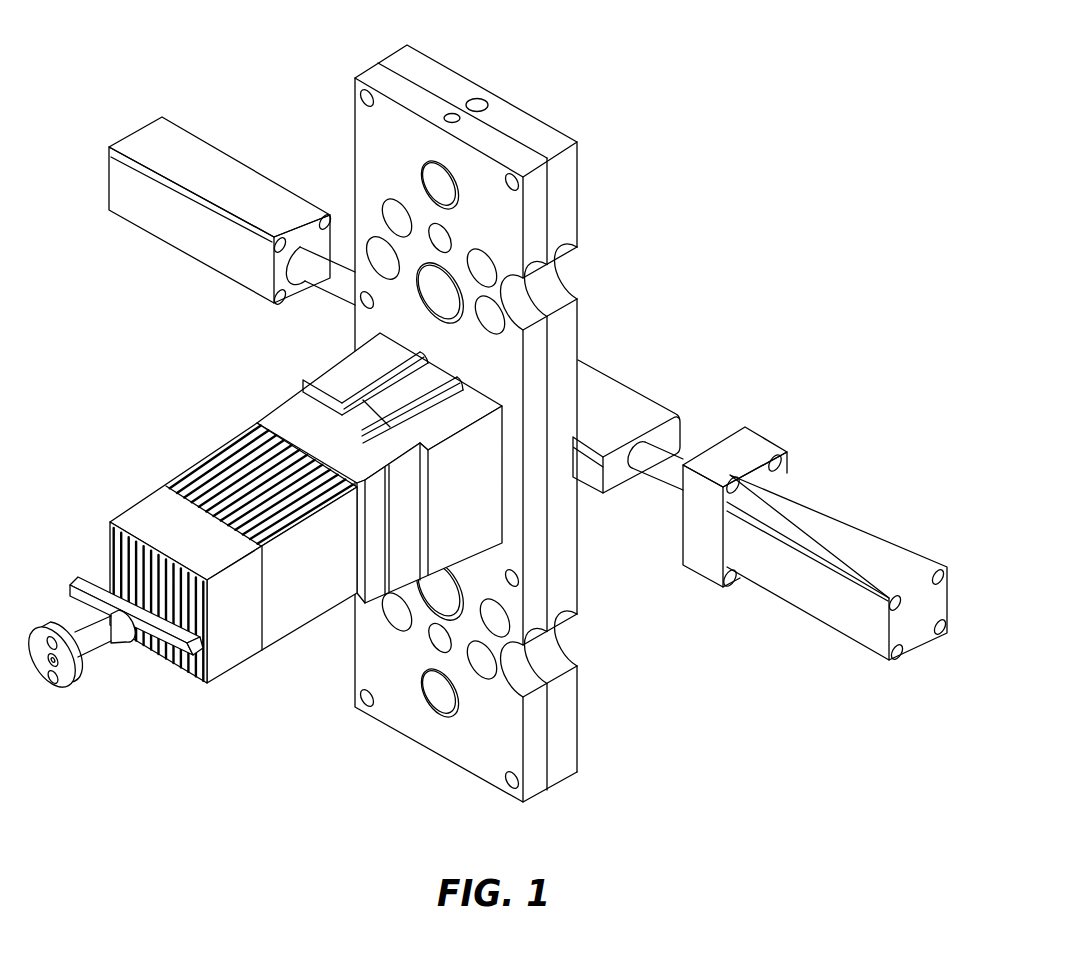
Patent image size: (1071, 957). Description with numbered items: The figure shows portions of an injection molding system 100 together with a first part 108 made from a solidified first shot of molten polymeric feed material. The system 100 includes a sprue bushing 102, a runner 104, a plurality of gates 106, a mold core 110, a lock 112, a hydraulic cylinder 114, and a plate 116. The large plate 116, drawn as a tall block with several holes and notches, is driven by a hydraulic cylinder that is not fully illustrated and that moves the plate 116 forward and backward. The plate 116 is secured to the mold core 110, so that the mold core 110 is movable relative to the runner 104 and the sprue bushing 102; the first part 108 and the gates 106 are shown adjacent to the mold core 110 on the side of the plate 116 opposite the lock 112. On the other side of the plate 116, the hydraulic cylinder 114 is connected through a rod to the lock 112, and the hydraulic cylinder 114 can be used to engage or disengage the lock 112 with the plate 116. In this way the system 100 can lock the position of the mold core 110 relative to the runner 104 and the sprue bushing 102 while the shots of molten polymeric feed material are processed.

The injection molding system 100 is at (668, 57).
The sprue bushing 102 is at (100, 647).
The runner 104 is at (92, 587).
The gates 106 is at (100, 578).
The first part 108 is at (233, 652).
The mold core 110 is at (327, 606).
The lock 112 is at (629, 384).
The hydraulic cylinder 114 is at (862, 512).
The plate 116 is at (582, 190).